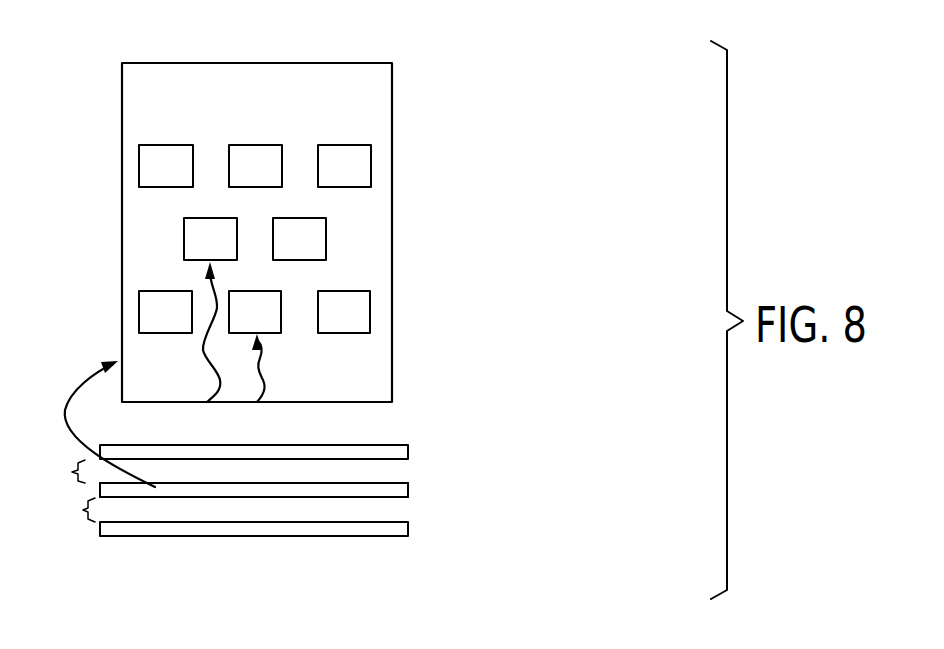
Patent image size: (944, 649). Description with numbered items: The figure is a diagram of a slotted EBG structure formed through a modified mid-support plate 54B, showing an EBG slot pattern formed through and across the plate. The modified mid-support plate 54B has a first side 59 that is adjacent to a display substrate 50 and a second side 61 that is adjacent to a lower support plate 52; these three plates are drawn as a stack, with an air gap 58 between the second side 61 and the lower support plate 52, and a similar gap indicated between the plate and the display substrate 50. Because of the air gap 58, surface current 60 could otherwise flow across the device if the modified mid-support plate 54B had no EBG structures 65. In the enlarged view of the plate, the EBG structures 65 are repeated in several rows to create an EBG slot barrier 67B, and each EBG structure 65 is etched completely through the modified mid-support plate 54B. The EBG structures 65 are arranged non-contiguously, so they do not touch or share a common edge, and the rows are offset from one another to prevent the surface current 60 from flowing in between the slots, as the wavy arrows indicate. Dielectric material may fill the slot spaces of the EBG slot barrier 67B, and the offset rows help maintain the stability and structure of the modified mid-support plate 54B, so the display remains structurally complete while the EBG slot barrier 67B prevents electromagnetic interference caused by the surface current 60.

The modified mid-support plate 54B is at (255, 63).
The EBG slot barrier 67B is at (116, 140).
The EBG structure 65 is at (326, 240).
The surface current 60 is at (203, 362).
The display substrate 50 is at (378, 445).
The lower support plate 52 is at (378, 536).
The first side 59 is at (288, 483).
The second side 61 is at (288, 497).
The air gap 58 is at (72, 472).